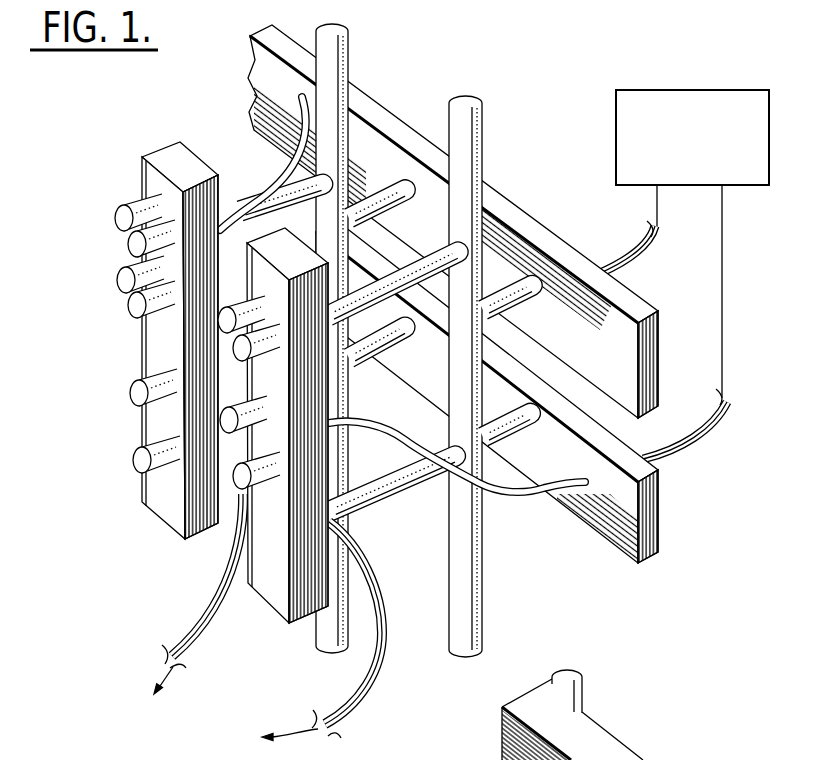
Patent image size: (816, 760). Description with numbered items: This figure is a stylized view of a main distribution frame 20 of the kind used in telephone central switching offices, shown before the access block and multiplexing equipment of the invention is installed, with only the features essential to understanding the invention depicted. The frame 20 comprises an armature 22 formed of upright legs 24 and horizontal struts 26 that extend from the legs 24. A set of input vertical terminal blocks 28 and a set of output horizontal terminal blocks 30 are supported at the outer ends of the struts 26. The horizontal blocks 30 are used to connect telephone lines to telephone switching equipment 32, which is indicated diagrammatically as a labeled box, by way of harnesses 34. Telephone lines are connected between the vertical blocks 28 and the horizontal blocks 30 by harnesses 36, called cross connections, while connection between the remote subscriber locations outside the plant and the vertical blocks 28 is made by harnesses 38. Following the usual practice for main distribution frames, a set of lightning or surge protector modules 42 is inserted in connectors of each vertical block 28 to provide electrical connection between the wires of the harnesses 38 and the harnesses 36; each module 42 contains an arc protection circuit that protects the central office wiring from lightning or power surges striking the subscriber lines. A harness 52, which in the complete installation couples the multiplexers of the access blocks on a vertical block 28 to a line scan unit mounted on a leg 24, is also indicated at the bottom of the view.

The main distribution frame 20 is at (509, 93).
The armature 22 is at (414, 505).
The upright legs 24 is at (333, 60).
The horizontal struts 26 is at (387, 190).
The input vertical terminal blocks 28 is at (173, 146).
The output horizontal terminal blocks 30 is at (652, 313).
The telephone switching equipment 32 is at (699, 88).
The harnesses 34 is at (632, 249).
The harnesses (cross connections) 36 is at (297, 156).
The harnesses 38 is at (216, 603).
The lightning or surge protector modules 42 is at (137, 314).
The harness 52 is at (431, 759).